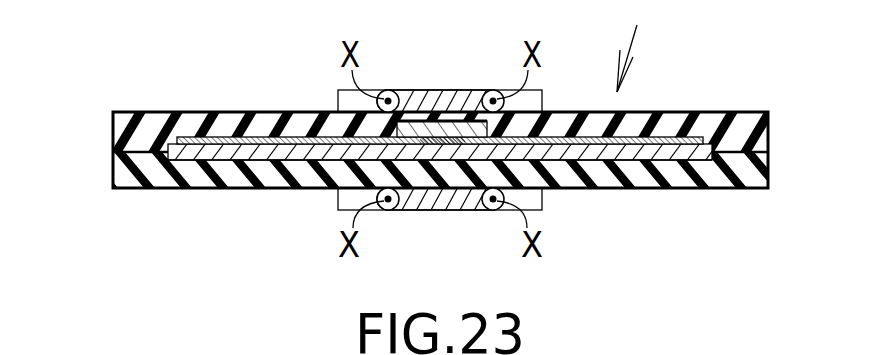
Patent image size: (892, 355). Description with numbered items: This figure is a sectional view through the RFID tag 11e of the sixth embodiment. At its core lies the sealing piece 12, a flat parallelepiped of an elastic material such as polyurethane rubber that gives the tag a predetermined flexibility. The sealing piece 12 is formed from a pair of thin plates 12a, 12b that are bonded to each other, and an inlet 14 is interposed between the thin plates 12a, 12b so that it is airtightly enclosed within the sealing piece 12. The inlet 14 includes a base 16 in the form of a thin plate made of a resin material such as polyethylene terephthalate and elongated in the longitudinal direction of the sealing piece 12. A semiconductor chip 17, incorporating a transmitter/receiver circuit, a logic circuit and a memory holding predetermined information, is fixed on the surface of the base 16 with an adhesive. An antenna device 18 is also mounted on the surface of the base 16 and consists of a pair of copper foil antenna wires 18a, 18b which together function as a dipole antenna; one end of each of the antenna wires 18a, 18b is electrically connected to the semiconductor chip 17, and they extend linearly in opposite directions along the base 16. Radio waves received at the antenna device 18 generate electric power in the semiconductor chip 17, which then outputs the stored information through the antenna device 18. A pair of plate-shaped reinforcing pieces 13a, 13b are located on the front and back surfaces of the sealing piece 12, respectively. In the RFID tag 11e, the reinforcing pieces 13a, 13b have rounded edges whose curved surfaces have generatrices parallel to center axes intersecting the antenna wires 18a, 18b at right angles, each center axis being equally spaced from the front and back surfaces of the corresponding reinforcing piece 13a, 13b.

The RFID tag 11e is at (644, 46).
The sealing piece 12 is at (447, 127).
The thin plate 12a is at (152, 113).
The thin plate 12b is at (167, 181).
The reinforcing piece 13a is at (450, 92).
The reinforcing piece 13b is at (447, 206).
The inlet 14 is at (476, 112).
The base 16 is at (682, 158).
The semiconductor chip 17 is at (404, 118).
The antenna device 18 is at (452, 140).
The antenna wire 18a is at (238, 147).
The antenna wire 18b is at (668, 137).